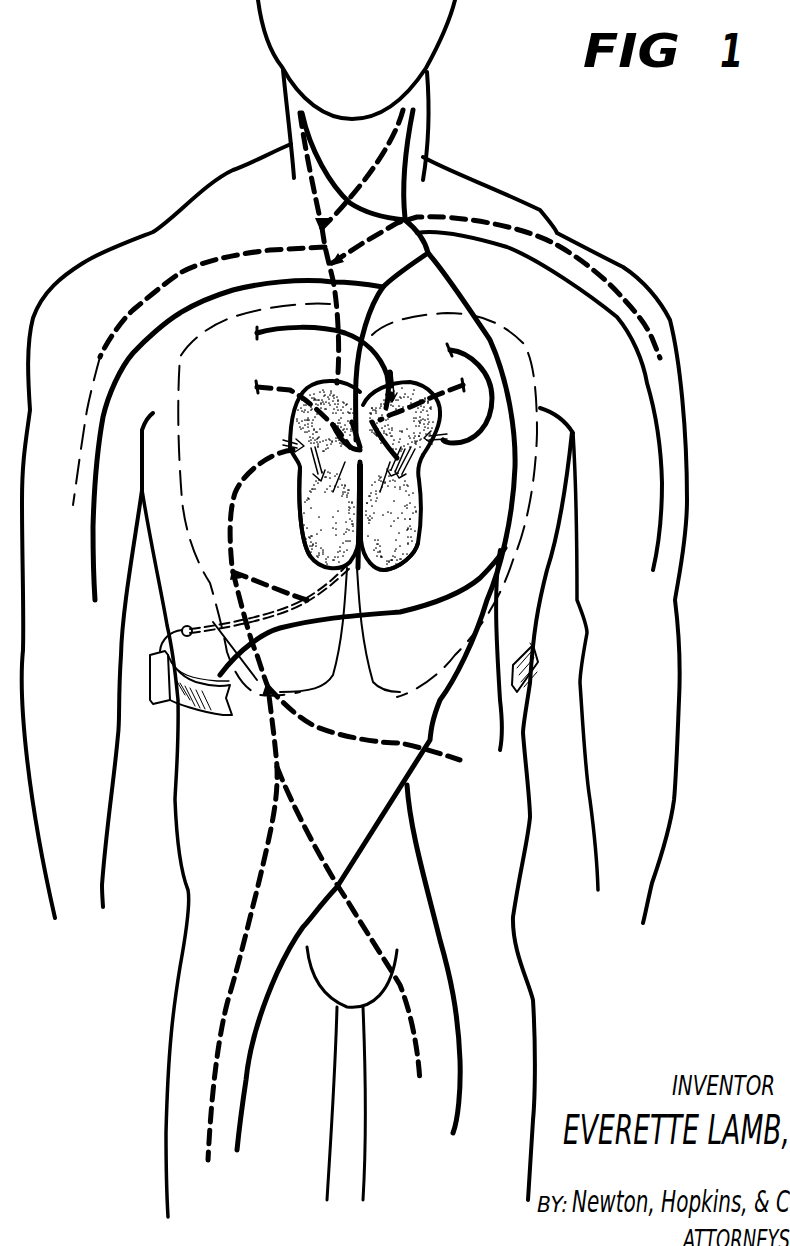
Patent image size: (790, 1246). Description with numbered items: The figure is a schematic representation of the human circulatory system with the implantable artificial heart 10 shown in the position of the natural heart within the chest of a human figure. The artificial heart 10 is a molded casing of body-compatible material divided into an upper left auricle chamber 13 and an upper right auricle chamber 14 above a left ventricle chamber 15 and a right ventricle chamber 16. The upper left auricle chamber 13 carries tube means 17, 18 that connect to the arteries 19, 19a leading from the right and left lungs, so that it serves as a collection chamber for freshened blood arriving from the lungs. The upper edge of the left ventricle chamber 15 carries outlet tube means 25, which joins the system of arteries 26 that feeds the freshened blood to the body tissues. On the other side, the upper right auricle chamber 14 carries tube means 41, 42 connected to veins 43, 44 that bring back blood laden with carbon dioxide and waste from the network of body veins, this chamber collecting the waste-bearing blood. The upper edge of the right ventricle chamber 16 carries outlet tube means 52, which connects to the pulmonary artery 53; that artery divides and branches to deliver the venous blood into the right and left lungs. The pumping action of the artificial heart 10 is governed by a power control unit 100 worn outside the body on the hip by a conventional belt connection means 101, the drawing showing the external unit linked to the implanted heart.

The implantable artificial heart 10 is at (423, 528).
The upper left auricle chamber 13 is at (423, 427).
The upper right auricle chamber 14 is at (320, 434).
The left ventricle chamber 15 is at (400, 528).
The right ventricle chamber 16 is at (340, 530).
The tube means 17 is at (392, 376).
The tube means 18 is at (443, 445).
The artery from right lung 19 is at (372, 352).
The artery from left lung 19a is at (468, 352).
The outlet tube means 25 is at (397, 440).
The system of arteries 26 is at (380, 284).
The tube means 41 is at (284, 438).
The tube means 42 is at (337, 382).
The vein 43 is at (237, 497).
The vein 44 is at (338, 341).
The outlet tube means 52 is at (297, 458).
The pulmonary artery 53 is at (257, 387).
The power control unit 100 is at (147, 683).
The belt connection means 101 is at (193, 710).